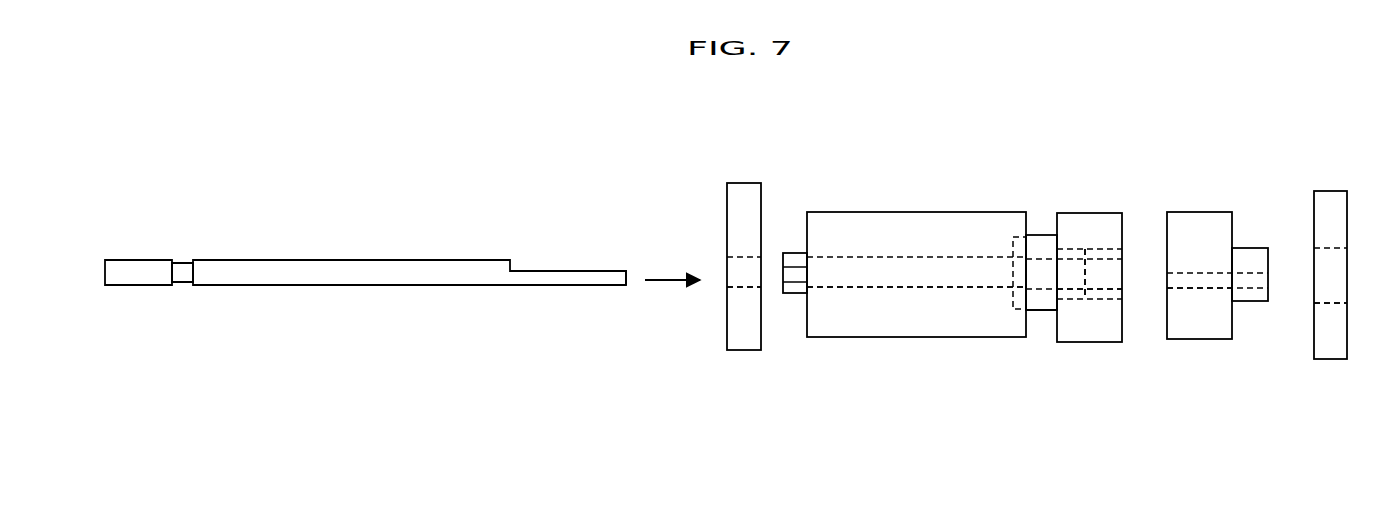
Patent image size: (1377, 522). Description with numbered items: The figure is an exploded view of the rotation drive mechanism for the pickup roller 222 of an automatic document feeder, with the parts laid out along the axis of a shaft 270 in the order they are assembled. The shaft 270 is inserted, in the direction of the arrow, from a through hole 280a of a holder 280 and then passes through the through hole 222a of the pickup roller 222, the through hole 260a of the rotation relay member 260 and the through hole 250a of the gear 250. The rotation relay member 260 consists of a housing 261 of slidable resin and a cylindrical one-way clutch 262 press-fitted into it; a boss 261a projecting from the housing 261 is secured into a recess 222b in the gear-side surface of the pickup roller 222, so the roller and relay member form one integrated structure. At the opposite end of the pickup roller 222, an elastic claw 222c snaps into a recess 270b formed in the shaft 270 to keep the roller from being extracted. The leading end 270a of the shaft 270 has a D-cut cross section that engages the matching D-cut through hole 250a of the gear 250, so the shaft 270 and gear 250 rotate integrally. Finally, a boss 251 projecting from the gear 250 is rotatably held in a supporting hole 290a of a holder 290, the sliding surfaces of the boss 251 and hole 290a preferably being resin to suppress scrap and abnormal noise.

The shaft 270 is at (342, 260).
The leading end of the shaft 270a is at (556, 267).
The recess of the shaft 270b is at (181, 259).
The holder 280 is at (742, 351).
The through hole of the holder 280a is at (737, 291).
The pickup roller 222 is at (918, 212).
The through hole of the pickup roller 222a is at (909, 290).
The recess of the pickup roller 222b is at (1015, 233).
The claw 222c is at (796, 294).
The housing 261 is at (1072, 212).
The boss of the housing 261a is at (1041, 311).
The rotation relay member 260 is at (1101, 210).
The through hole of the rotation relay member 260a is at (1109, 291).
The one-way clutch 262 is at (1092, 296).
The gear 250 is at (1198, 212).
The through hole of the gear 250a is at (1195, 291).
The boss of the gear 251 is at (1255, 248).
The holder 290 is at (1335, 191).
The supporting hole of the holder 290a is at (1333, 306).